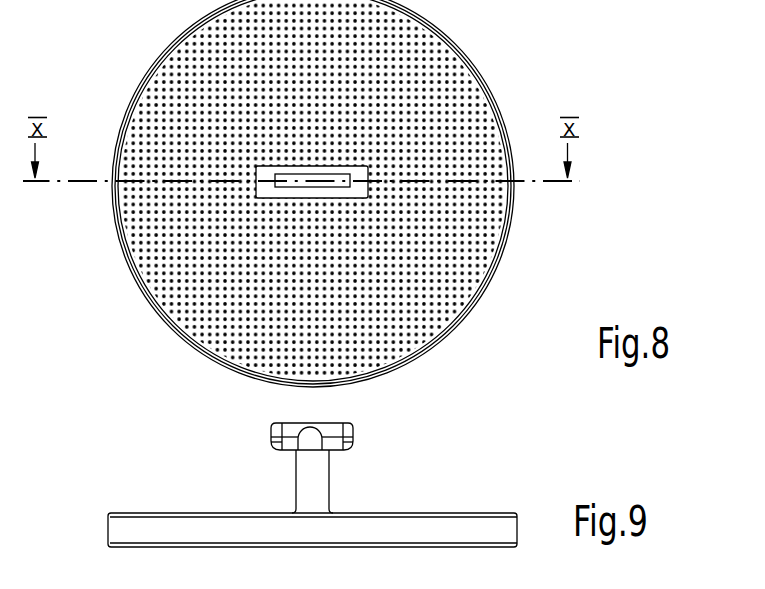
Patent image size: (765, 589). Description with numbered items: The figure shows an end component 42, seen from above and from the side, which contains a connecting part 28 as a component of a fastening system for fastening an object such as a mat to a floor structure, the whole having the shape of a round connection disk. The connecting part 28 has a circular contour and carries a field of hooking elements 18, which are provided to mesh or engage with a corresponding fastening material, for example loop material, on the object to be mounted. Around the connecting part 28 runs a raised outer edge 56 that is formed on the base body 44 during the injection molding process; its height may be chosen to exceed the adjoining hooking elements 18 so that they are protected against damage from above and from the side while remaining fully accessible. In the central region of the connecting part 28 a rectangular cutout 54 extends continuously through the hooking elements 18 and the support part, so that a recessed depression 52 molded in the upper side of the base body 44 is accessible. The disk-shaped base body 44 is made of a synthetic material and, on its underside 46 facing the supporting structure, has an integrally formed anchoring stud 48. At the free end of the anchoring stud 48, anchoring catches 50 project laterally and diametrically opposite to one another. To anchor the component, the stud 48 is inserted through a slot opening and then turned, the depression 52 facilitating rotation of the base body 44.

In FIG. 8, the hooking elements 18 is at (395, 107).
In FIG. 8, the raised outer edge 56 is at (503, 105).
In FIG. 8, the connecting part 28 is at (478, 285).
In FIG. 8, the recessed depression 52 is at (283, 182).
In FIG. 8, the rectangular cutout 54 is at (330, 193).
In FIG. 8, the end component 42 is at (487, 329).
In FIG. 9, the end component 42 is at (500, 480).
In FIG. 9, the base body 44 is at (175, 523).
In FIG. 9, the underside 46 is at (427, 513).
In FIG. 9, the anchoring stud 48 is at (311, 474).
In FIG. 9, the anchoring catches 50 is at (283, 426).